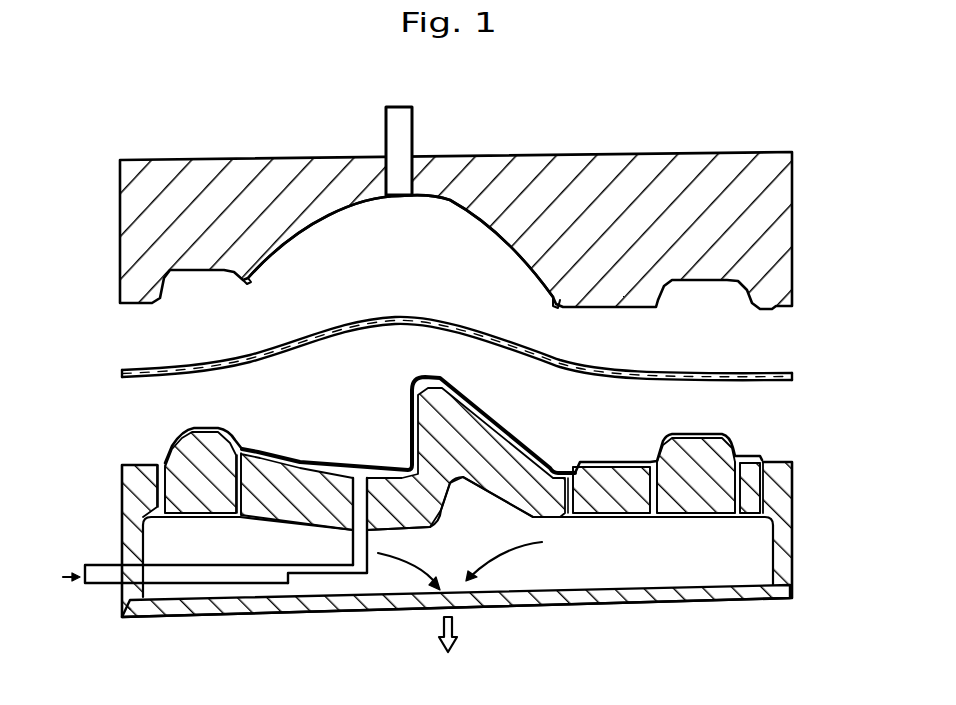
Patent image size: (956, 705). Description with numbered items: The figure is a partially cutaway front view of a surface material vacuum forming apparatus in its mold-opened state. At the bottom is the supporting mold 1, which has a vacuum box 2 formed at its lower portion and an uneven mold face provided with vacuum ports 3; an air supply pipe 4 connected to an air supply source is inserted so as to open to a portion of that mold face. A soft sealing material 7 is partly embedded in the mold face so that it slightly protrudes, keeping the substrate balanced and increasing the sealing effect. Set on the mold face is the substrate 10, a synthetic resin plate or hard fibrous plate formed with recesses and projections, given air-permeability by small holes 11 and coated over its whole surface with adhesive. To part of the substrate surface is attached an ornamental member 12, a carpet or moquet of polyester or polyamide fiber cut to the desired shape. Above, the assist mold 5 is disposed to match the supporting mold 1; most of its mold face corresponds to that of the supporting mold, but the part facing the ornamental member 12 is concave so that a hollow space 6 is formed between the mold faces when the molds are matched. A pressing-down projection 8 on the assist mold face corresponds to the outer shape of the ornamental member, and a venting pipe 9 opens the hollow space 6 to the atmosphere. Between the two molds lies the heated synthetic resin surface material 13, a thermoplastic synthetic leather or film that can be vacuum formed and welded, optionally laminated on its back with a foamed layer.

The supporting mold 1 is at (790, 517).
The vacuum box 2 is at (530, 597).
The vacuum ports 3 is at (240, 517).
The air supply pipe 4 is at (177, 600).
The assist mold 5 is at (295, 170).
The hollow space 6 is at (404, 222).
The soft sealing material 7 is at (257, 515).
The pressing-down projection 8 is at (247, 284).
The venting pipe 9 is at (386, 117).
The substrate 10 is at (712, 432).
The small holes 11 is at (362, 472).
The ornamental member 12 is at (546, 456).
The synthetic resin surface material 13 is at (340, 322).